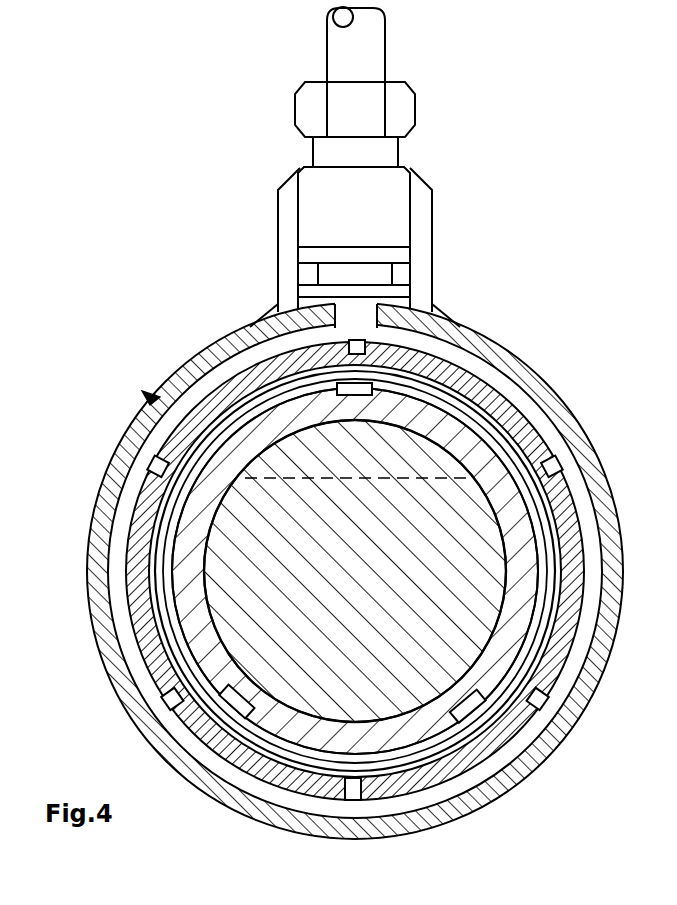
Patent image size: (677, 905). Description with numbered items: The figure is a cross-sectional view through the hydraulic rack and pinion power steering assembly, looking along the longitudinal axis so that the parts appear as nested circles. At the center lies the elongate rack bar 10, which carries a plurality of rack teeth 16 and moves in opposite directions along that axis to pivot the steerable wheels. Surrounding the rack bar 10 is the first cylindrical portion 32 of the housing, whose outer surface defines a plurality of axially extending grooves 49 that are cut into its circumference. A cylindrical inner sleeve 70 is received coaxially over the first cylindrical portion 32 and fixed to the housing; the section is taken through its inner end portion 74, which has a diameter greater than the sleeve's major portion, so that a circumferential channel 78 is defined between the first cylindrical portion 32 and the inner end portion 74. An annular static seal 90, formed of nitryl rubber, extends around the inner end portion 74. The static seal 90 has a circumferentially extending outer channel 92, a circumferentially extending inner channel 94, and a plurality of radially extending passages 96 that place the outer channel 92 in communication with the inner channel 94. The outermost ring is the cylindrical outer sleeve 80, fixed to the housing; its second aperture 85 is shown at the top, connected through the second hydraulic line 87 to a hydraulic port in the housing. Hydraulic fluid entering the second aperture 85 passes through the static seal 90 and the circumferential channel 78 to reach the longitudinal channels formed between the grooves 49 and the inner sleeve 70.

The rack bar 10 is at (432, 562).
The rack teeth 16 is at (417, 453).
The first cylindrical portion 32 is at (180, 583).
The axially extending grooves 49 is at (372, 387).
The inner sleeve 70 is at (143, 487).
The inner end portion 74 is at (163, 520).
The circumferential channel 78 is at (167, 543).
The outer sleeve 80 is at (243, 333).
The second aperture 85 is at (353, 313).
The second hydraulic line 87 is at (352, 48).
The static seal 90 is at (150, 405).
The outer channel 92 is at (215, 372).
The inner channel 94 is at (205, 410).
The radially extending passages 96 is at (360, 345).